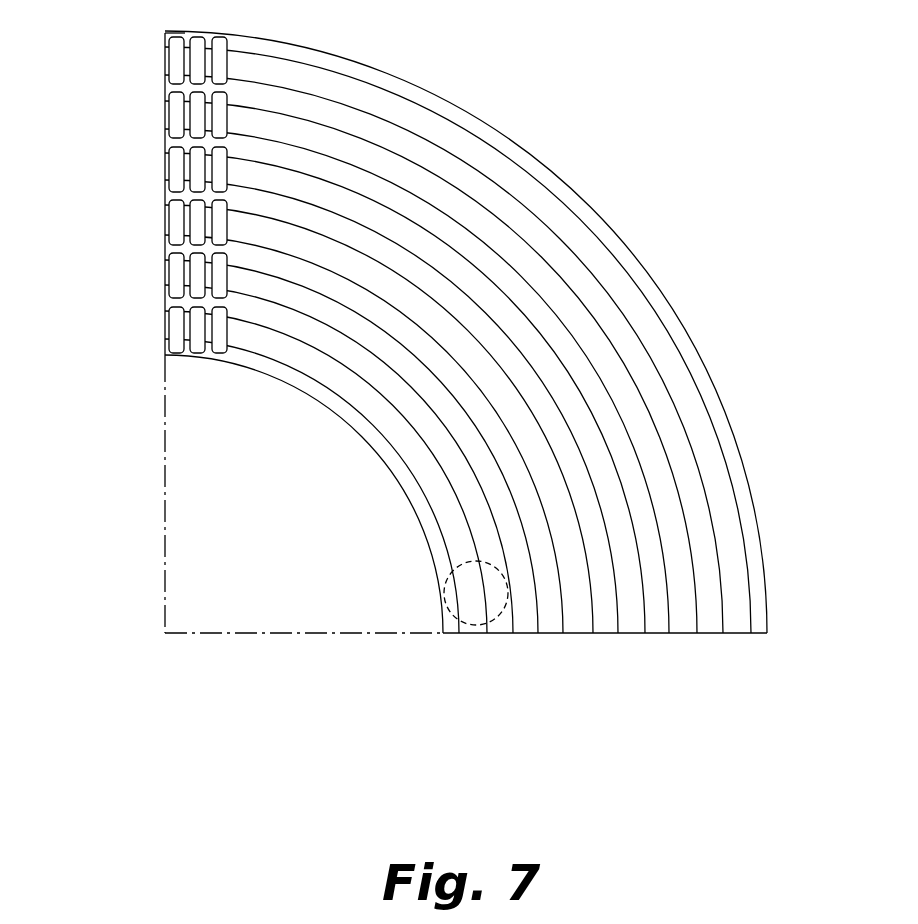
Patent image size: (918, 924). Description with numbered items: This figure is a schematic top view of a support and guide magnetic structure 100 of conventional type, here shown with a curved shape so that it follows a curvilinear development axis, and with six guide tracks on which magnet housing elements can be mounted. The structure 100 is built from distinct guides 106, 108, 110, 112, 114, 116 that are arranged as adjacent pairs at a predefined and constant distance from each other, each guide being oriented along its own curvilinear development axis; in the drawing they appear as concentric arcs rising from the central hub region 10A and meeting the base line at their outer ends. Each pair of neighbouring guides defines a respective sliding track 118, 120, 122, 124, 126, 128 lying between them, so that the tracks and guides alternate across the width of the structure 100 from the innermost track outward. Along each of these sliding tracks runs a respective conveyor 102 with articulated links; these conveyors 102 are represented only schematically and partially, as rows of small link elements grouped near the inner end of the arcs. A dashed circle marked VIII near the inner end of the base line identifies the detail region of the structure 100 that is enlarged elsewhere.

The support and guide magnetic structure 100 is at (422, 393).
The conveyor with articulated links 102 is at (165, 62).
The hub region 10A is at (450, 625).
The guide 106 is at (500, 625).
The guide 108 is at (555, 625).
The guide 110 is at (605, 625).
The guide 112 is at (659, 625).
The guide 114 is at (710, 625).
The guide 116 is at (760, 625).
The sliding track 118 is at (283, 345).
The sliding track 120 is at (350, 320).
The sliding track 122 is at (440, 322).
The sliding track 124 is at (325, 197).
The sliding track 126 is at (413, 180).
The sliding track 128 is at (490, 168).
The detail view indicator VIII is at (443, 612).